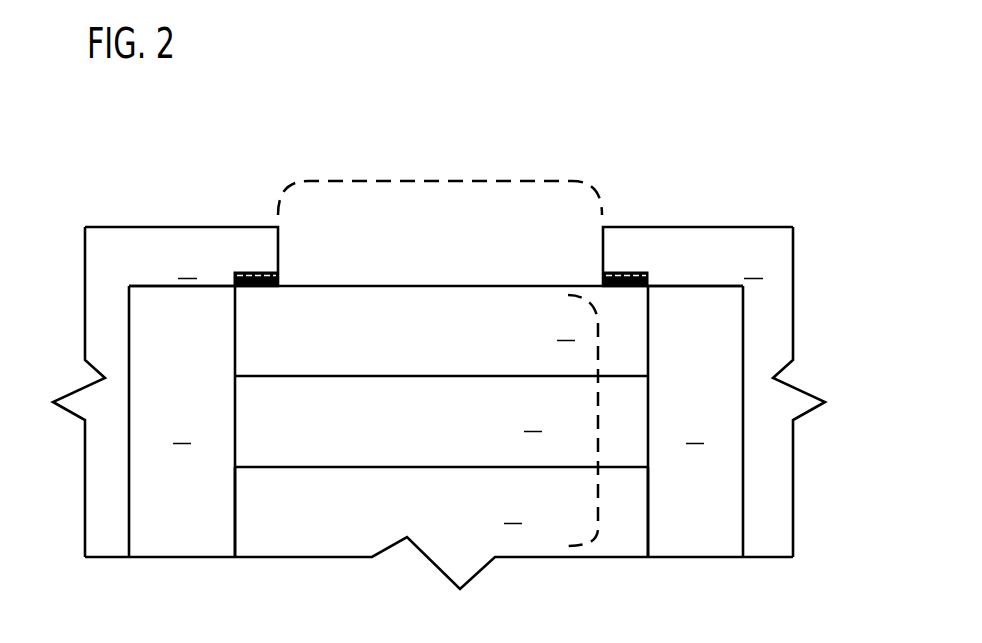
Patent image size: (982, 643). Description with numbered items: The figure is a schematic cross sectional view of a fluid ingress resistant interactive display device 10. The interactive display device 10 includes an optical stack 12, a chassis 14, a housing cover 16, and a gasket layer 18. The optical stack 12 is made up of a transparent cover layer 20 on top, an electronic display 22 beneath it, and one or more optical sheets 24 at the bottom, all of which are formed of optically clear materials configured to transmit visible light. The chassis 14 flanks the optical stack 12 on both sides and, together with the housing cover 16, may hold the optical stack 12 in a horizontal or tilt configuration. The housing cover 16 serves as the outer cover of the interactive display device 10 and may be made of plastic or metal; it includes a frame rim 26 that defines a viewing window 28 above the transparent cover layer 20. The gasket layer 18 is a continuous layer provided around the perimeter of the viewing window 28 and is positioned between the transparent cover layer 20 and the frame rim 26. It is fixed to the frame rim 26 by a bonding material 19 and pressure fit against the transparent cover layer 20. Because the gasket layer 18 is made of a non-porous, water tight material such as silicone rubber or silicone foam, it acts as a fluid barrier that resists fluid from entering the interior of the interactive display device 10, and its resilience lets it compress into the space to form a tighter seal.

The interactive display device 10 is at (603, 76).
The optical stack 12 is at (607, 428).
The chassis 14 is at (436, 421).
The housing cover 16 is at (439, 256).
The gasket layer 18 is at (291, 280).
The bonding material 19 is at (289, 266).
The transparent cover layer 20 is at (441, 331).
The electronic display 22 is at (441, 438).
The optical sheets 24 is at (441, 512).
The frame rim 26 is at (257, 210).
The viewing window 28 is at (461, 182).